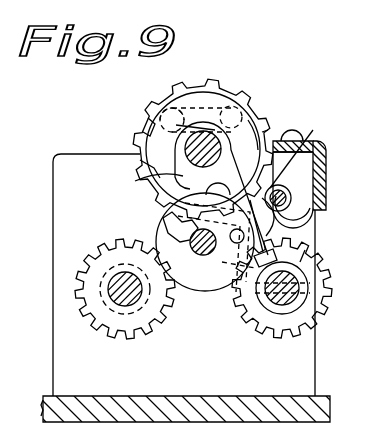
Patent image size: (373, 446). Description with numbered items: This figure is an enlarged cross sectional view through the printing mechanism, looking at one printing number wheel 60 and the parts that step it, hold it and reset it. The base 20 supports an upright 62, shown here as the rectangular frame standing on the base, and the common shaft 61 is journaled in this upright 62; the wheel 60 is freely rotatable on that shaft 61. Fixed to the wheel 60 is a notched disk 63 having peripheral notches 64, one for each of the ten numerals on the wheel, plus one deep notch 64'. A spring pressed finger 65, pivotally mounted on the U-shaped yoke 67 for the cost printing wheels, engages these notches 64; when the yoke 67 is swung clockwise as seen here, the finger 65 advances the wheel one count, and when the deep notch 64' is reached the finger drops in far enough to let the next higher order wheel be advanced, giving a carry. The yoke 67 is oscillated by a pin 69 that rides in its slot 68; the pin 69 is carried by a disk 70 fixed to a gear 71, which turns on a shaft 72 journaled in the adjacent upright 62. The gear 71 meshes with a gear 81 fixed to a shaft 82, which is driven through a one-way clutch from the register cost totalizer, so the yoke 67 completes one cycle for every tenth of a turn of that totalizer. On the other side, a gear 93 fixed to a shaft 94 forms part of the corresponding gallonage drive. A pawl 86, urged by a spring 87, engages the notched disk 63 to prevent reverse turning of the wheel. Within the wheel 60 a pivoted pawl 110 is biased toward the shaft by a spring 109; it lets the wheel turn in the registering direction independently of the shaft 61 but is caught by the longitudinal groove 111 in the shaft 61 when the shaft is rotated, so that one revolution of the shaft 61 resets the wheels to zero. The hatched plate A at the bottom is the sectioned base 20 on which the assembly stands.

The base 20 is at (46, 396).
The mounting surface A is at (34, 407).
The upright 62 is at (53, 197).
The printing number wheel 60 is at (235, 92).
The common shaft 61 is at (250, 138).
The notched disk 63 is at (270, 120).
The peripheral notch 64 is at (127, 132).
The deep notch 64' is at (140, 169).
The spring pressed finger 65 is at (162, 207).
The yoke 67 is at (245, 237).
The slot 68 is at (305, 257).
The pin 69 is at (300, 225).
The disk 70 is at (222, 292).
The gear 71 is at (183, 296).
The shaft 72 is at (185, 230).
The gear 81 is at (82, 275).
The shaft 82 is at (110, 291).
The pawl 86 is at (316, 131).
The spring 87 is at (318, 172).
The gear 93 is at (318, 312).
The shaft 94 is at (300, 288).
The spring 109 is at (186, 108).
The pivoted pawl 110 is at (218, 107).
The longitudinal groove 111 is at (177, 150).